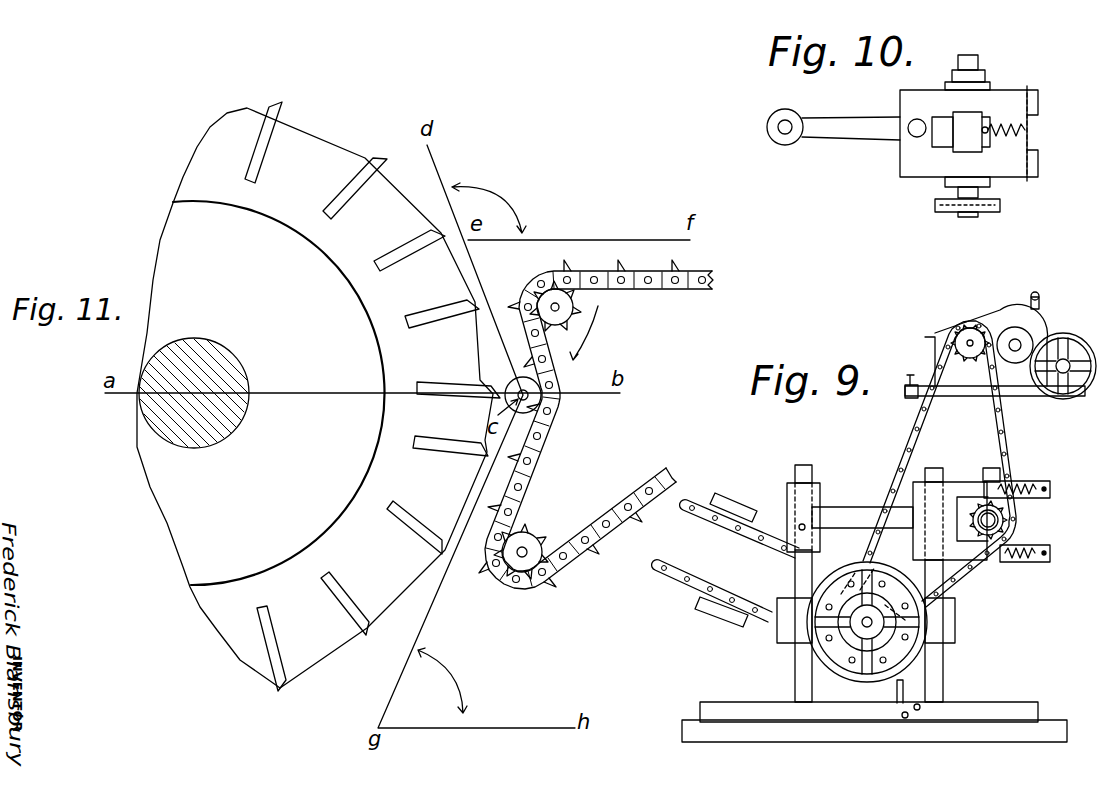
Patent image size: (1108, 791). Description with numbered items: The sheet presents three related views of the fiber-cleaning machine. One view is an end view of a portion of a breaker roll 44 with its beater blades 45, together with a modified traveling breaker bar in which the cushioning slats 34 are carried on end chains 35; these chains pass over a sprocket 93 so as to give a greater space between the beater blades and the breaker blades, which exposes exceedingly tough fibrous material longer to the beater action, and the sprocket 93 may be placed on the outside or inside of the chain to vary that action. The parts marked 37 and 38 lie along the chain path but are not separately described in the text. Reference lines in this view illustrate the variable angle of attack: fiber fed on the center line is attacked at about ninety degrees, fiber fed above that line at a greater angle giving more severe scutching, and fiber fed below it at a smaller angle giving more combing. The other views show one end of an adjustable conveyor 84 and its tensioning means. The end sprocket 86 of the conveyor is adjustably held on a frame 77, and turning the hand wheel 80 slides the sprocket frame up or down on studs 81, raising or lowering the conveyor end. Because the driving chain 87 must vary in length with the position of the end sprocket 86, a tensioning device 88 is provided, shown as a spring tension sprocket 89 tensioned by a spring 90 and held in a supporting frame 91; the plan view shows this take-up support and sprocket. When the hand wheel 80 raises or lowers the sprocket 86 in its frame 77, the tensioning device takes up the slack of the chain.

In FIG. 11, the drum 44 is at (315, 398).
In FIG. 11, the blades 45 is at (418, 305).
In FIG. 11, the cushioning slats 34 is at (586, 268).
In FIG. 11, the end chains 35 is at (670, 284).
In FIG. 11, the chain strand direction 37 is at (593, 333).
In FIG. 11, the lower sprocket 38 is at (530, 545).
In FIG. 11, the sprocket 93 is at (548, 406).
In FIG. 10, the spring tension sprocket 89 is at (956, 223).
In FIG. 9, the spring tension sprocket 89 is at (1017, 522).
In FIG. 10, the spring 90 is at (1015, 140).
In FIG. 10, the supporting frame 91 is at (920, 167).
In FIG. 9, the frame 77 is at (970, 624).
In FIG. 9, the hand wheel 80 is at (928, 655).
In FIG. 9, the studs 81 is at (786, 672).
In FIG. 9, the adjacent conveyor 84 is at (696, 592).
In FIG. 9, the end sprocket 86 is at (790, 578).
In FIG. 9, the driving chain 87 is at (898, 455).
In FIG. 9, the tensioning device 88 is at (980, 463).